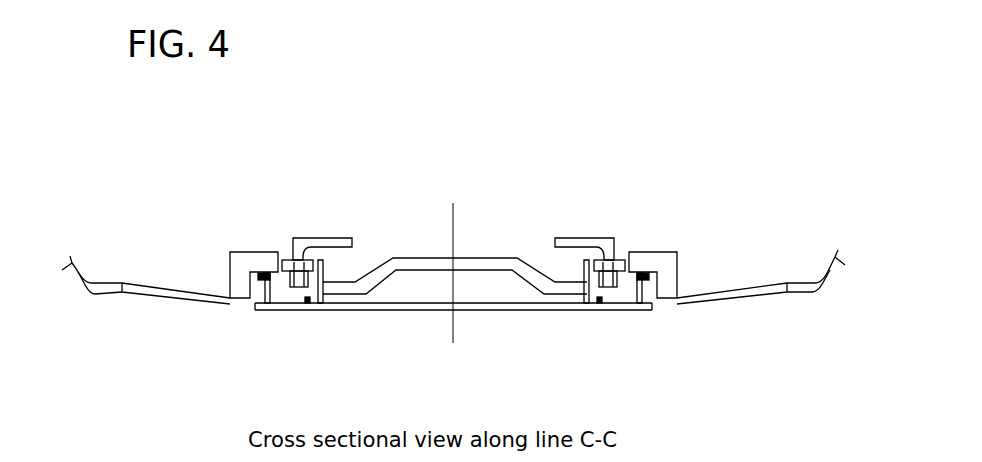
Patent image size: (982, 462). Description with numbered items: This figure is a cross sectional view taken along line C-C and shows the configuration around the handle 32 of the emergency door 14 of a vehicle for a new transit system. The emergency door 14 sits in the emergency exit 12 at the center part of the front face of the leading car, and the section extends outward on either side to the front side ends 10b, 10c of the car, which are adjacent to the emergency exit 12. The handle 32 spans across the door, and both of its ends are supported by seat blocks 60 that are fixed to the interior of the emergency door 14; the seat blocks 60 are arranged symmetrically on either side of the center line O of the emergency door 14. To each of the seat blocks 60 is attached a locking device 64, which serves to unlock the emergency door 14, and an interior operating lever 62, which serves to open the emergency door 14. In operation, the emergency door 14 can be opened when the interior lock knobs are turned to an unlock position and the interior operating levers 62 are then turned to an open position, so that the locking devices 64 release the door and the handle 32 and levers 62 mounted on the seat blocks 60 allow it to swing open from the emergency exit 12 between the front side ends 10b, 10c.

The center line O is at (455, 290).
The handle 32 is at (430, 257).
The emergency door 14 is at (382, 312).
The emergency exit 12 is at (652, 307).
The seat block 60 is at (287, 257).
The interior operating lever 62 is at (327, 238).
The locking device 64 is at (340, 268).
The front side end 10c is at (138, 298).
The front side end 10b is at (763, 297).